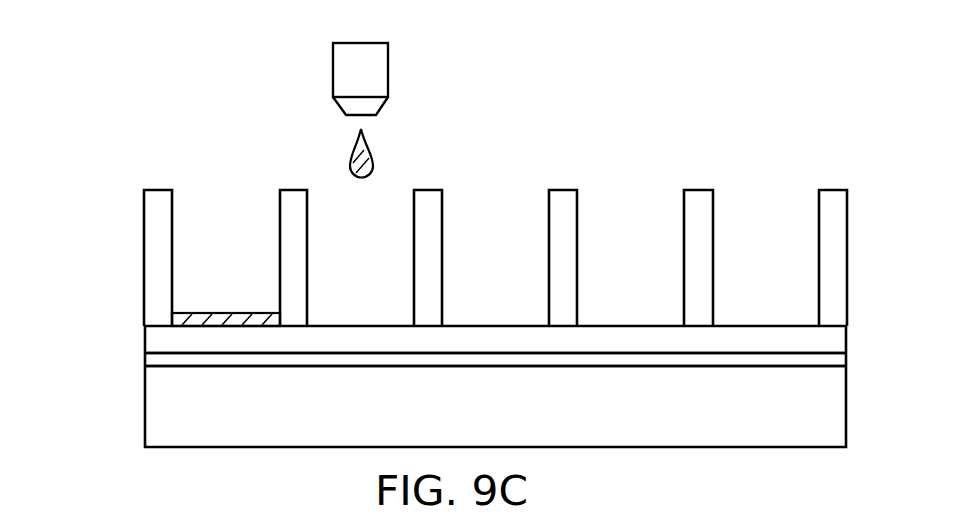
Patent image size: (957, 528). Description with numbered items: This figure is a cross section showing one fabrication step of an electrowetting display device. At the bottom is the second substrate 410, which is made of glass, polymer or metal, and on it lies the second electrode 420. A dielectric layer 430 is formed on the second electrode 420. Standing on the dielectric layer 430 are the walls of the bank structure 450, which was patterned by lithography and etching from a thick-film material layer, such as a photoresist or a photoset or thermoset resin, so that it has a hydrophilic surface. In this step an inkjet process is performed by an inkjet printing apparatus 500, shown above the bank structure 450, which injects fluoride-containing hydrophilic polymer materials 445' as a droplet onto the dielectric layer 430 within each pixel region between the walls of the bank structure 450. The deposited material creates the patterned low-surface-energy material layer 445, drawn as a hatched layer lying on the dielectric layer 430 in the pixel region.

The second substrate 410 is at (158, 406).
The second electrode 420 is at (158, 360).
The dielectric layer 430 is at (158, 339).
The patterned low-surface-energy material layer 445 is at (164, 316).
The fluoride-containing hydrophilic polymer materials 445' is at (302, 153).
The bank structure 450 is at (158, 259).
The inkjet printing apparatus 500 is at (348, 70).